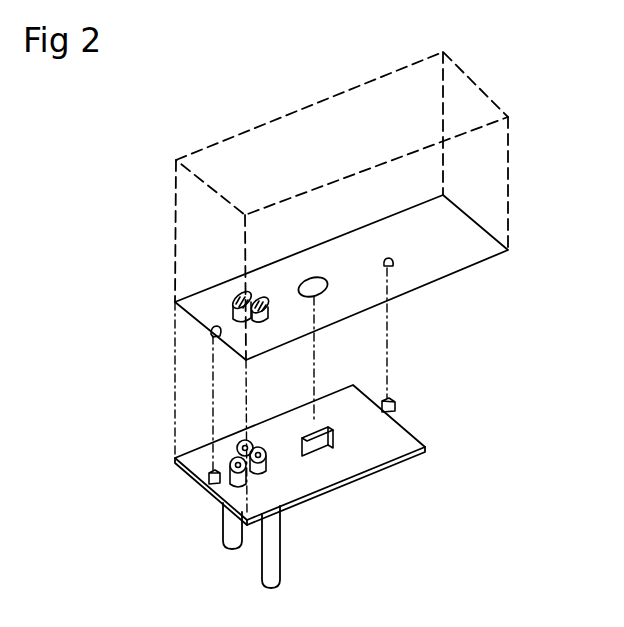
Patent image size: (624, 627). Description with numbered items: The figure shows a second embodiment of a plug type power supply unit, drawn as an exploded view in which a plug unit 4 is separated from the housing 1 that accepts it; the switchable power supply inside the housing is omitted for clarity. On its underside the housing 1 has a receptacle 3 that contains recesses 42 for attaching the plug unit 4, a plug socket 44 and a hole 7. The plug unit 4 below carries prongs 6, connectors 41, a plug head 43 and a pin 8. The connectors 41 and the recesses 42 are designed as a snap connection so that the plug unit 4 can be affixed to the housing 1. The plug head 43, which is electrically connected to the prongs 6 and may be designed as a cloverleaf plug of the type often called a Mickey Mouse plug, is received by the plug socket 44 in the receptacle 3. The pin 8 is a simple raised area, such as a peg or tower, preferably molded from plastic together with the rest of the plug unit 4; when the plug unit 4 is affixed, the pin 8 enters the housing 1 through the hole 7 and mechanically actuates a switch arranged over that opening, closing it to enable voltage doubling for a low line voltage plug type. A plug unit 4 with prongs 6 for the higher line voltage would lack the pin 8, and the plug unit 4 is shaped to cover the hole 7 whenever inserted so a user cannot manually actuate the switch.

The housing 1 is at (510, 205).
The receptacle 3 is at (354, 287).
The plug unit 4 is at (366, 488).
The prongs 6 is at (258, 582).
The hole 7 is at (325, 280).
The pin 8 is at (331, 448).
The connectors 41 is at (208, 481).
The recesses 42 is at (212, 326).
The plug head 43 is at (268, 470).
The plug socket 44 is at (268, 316).